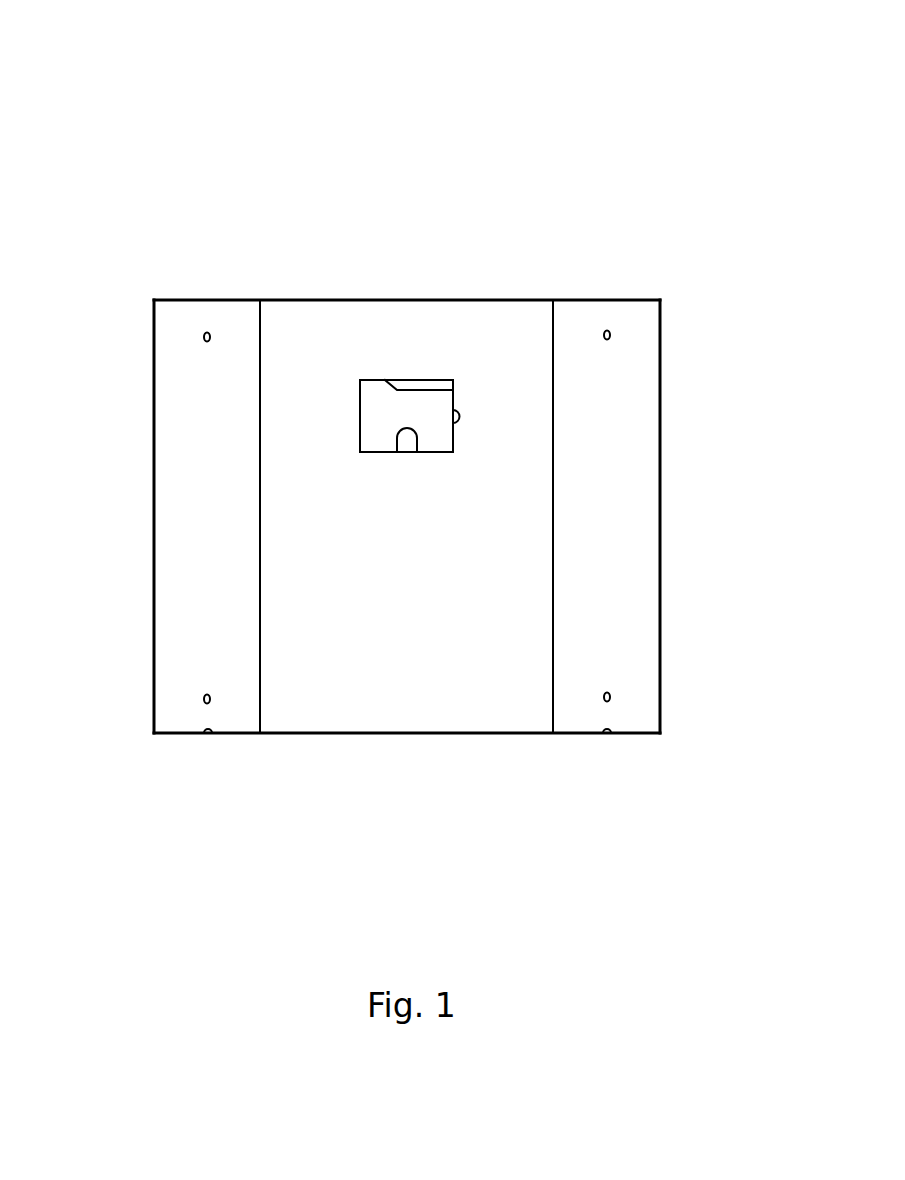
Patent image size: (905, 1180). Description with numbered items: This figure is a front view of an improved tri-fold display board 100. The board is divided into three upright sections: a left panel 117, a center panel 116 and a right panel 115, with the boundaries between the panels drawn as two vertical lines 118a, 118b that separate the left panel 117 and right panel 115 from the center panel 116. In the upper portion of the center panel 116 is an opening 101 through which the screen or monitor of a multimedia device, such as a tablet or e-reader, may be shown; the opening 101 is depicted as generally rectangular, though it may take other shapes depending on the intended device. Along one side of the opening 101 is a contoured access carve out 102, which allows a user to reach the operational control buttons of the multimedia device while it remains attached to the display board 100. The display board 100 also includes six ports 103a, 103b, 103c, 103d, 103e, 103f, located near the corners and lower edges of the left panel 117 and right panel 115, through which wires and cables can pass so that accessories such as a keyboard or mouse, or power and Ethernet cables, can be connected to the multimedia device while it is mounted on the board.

The tri-fold display board 100 is at (125, 147).
The opening 101 is at (381, 415).
The contoured access carve out 102 is at (464, 406).
The port 103a is at (614, 334).
The port 103b is at (614, 696).
The port 103c is at (609, 738).
The port 103d is at (208, 738).
The port 103e is at (200, 699).
The port 103f is at (200, 337).
The right panel 115 is at (610, 588).
The center panel 116 is at (423, 697).
The left panel 117 is at (203, 572).
The left fold line 118a is at (257, 302).
The right fold line 118b is at (555, 298).